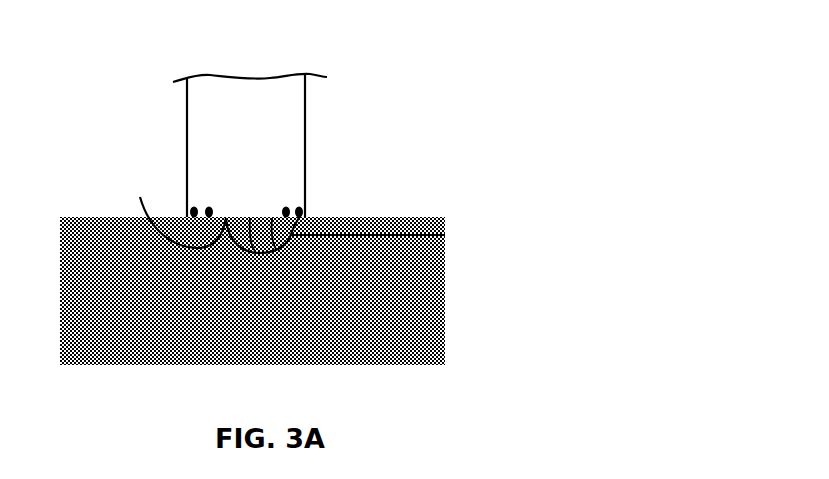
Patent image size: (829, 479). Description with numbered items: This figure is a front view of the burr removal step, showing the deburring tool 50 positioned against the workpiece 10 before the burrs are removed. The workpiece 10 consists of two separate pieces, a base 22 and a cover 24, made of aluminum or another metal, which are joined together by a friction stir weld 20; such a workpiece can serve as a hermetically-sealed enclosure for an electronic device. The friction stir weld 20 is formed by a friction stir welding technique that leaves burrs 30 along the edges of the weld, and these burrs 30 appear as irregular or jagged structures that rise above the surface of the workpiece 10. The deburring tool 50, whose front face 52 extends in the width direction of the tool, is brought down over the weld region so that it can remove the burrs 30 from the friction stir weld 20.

The workpiece 10 is at (453, 184).
The friction stir weld 20 is at (212, 216).
The base 22 is at (425, 297).
The cover 24 is at (356, 220).
The burrs 30 is at (294, 230).
The deburring tool 50 is at (87, 158).
The front face 52 is at (285, 118).